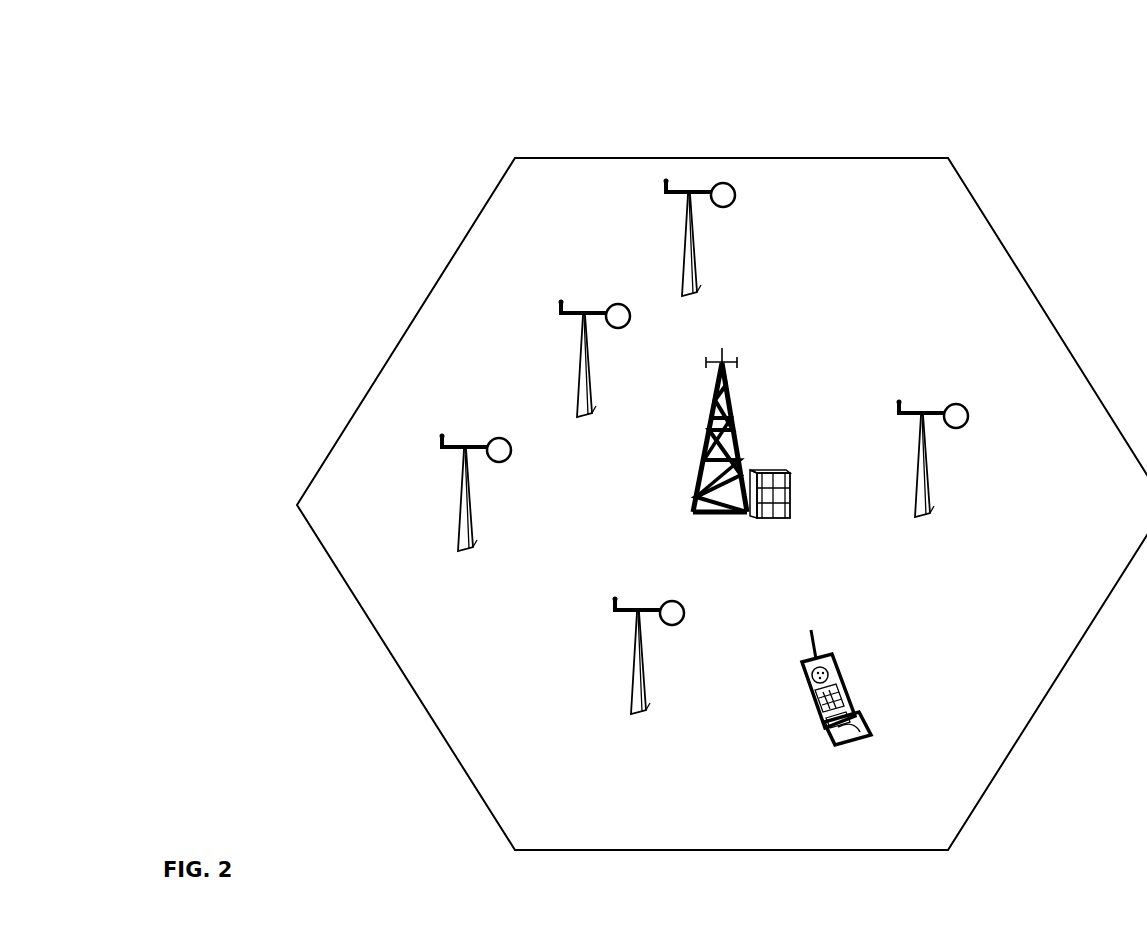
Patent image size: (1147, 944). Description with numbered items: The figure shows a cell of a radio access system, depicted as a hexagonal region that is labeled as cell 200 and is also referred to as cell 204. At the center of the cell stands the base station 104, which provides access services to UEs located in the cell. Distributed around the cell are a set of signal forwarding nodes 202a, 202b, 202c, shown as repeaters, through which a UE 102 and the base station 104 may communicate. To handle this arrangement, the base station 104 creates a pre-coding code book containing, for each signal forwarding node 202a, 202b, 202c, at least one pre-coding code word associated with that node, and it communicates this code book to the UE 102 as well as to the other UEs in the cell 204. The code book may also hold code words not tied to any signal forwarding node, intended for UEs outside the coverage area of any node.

The cell 200 is at (515, 78).
The cell 204 is at (878, 182).
The base station 104 is at (740, 367).
The UE 102 is at (838, 744).
The signal forwarding node 202a is at (947, 407).
The signal forwarding node 202b is at (627, 720).
The signal forwarding node 202c is at (593, 302).